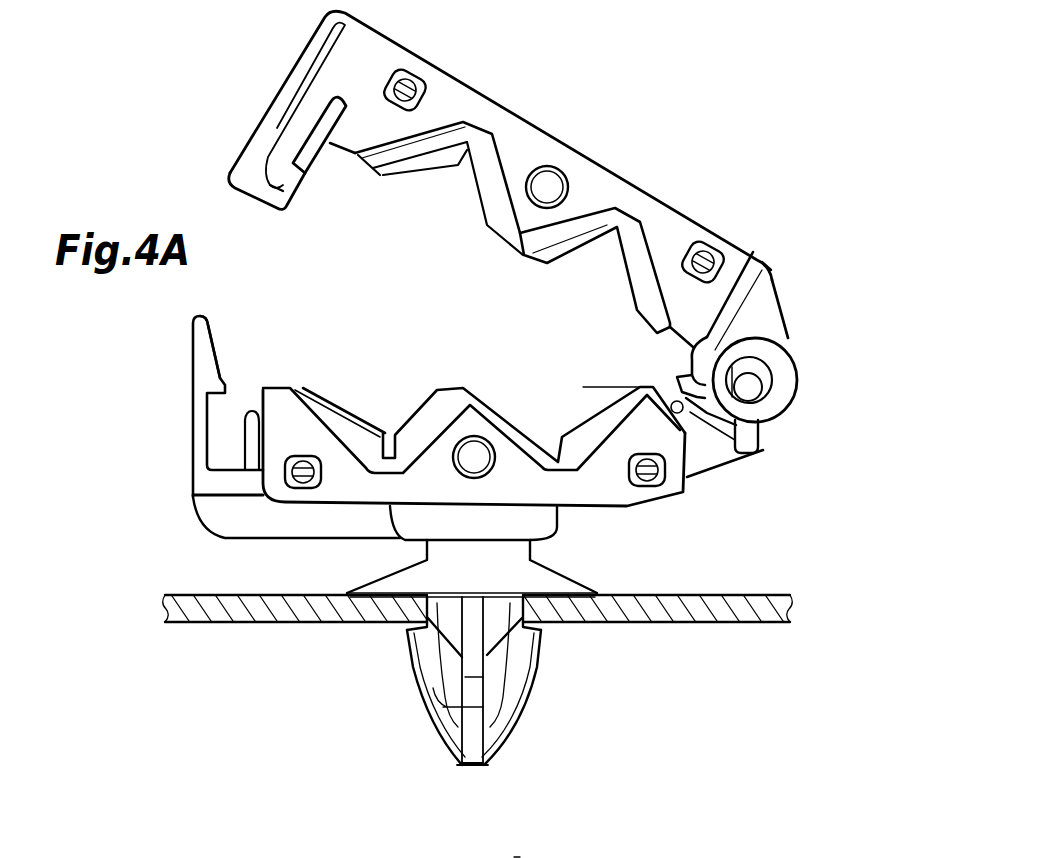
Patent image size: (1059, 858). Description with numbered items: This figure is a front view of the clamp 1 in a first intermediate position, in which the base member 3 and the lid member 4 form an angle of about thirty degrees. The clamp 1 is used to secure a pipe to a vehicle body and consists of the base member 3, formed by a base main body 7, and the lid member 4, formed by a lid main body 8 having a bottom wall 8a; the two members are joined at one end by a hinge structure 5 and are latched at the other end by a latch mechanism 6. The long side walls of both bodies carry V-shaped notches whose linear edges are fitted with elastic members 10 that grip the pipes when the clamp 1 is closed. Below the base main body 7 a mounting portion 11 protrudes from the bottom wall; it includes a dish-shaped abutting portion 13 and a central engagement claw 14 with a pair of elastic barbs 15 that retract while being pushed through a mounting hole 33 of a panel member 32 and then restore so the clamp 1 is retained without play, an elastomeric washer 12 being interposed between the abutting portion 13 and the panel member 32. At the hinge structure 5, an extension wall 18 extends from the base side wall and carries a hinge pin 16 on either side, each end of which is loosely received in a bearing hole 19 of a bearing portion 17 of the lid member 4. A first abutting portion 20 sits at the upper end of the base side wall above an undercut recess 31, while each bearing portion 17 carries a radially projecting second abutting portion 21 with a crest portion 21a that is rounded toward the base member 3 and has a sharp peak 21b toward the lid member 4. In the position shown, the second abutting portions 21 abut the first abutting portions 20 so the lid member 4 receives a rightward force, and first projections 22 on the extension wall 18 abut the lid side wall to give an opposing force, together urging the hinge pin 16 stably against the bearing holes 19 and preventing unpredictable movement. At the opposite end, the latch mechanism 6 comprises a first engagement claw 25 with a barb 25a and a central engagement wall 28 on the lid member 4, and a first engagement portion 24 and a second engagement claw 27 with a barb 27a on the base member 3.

The clamp 1 is at (714, 89).
The base member 3 is at (659, 527).
The lid member 4 is at (672, 184).
The hinge structure 5 is at (786, 413).
The latch mechanism 6 is at (227, 73).
The base main body 7 is at (594, 513).
The lid main body 8 is at (549, 127).
The bottom wall 8a is at (517, 857).
The elastic member 10 is at (405, 170).
The mounting portion 11 is at (414, 662).
The washer 12 is at (350, 595).
The abutting portion 13 is at (403, 573).
The engagement claw 14 is at (463, 770).
The elastic barbs 15 is at (513, 683).
The hinge pin 16 is at (762, 387).
The bearing portion 17 is at (780, 352).
The extension wall 18 is at (698, 470).
The bearing hole 19 is at (748, 357).
The first abutting portion 20 is at (683, 390).
The second abutting portion 21 is at (750, 463).
The crest portion 21a is at (700, 414).
The peak 21b is at (769, 264).
The first projection 22 is at (697, 360).
The first engagement portion 24 is at (253, 410).
The first engagement claw 25 is at (308, 115).
The barb 25a is at (284, 206).
The second engagement claw 27 is at (197, 423).
The barb 27a is at (200, 360).
The engagement wall 28 is at (250, 162).
The undercut recess 31 is at (653, 398).
The panel member 32 is at (743, 623).
The mounting hole 33 is at (530, 652).